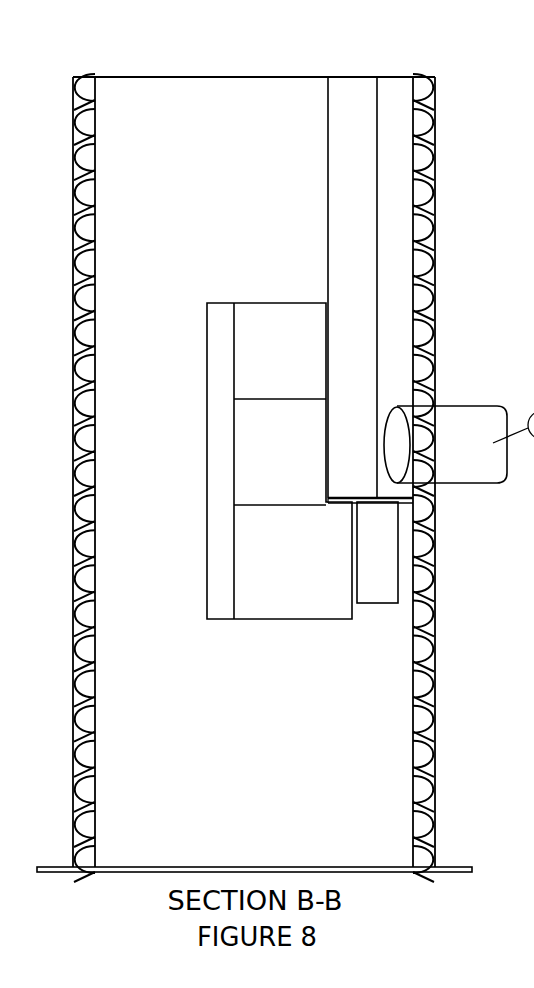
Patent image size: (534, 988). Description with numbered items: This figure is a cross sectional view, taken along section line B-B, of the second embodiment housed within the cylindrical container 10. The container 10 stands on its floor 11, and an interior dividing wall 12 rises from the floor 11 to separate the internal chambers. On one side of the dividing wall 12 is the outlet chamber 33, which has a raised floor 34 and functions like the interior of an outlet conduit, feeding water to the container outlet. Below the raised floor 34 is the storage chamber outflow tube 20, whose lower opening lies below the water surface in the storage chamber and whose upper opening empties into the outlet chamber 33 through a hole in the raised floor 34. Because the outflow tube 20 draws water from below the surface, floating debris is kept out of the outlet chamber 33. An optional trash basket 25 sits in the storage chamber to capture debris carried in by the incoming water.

The cylindrical container 10 is at (422, 193).
The floor 11 is at (375, 872).
The interior dividing wall 12 is at (311, 77).
The storage chamber outflow tube 20 is at (382, 595).
The trash basket 25 is at (208, 619).
The outlet chamber 33 is at (358, 138).
The raised floor 34 is at (407, 500).